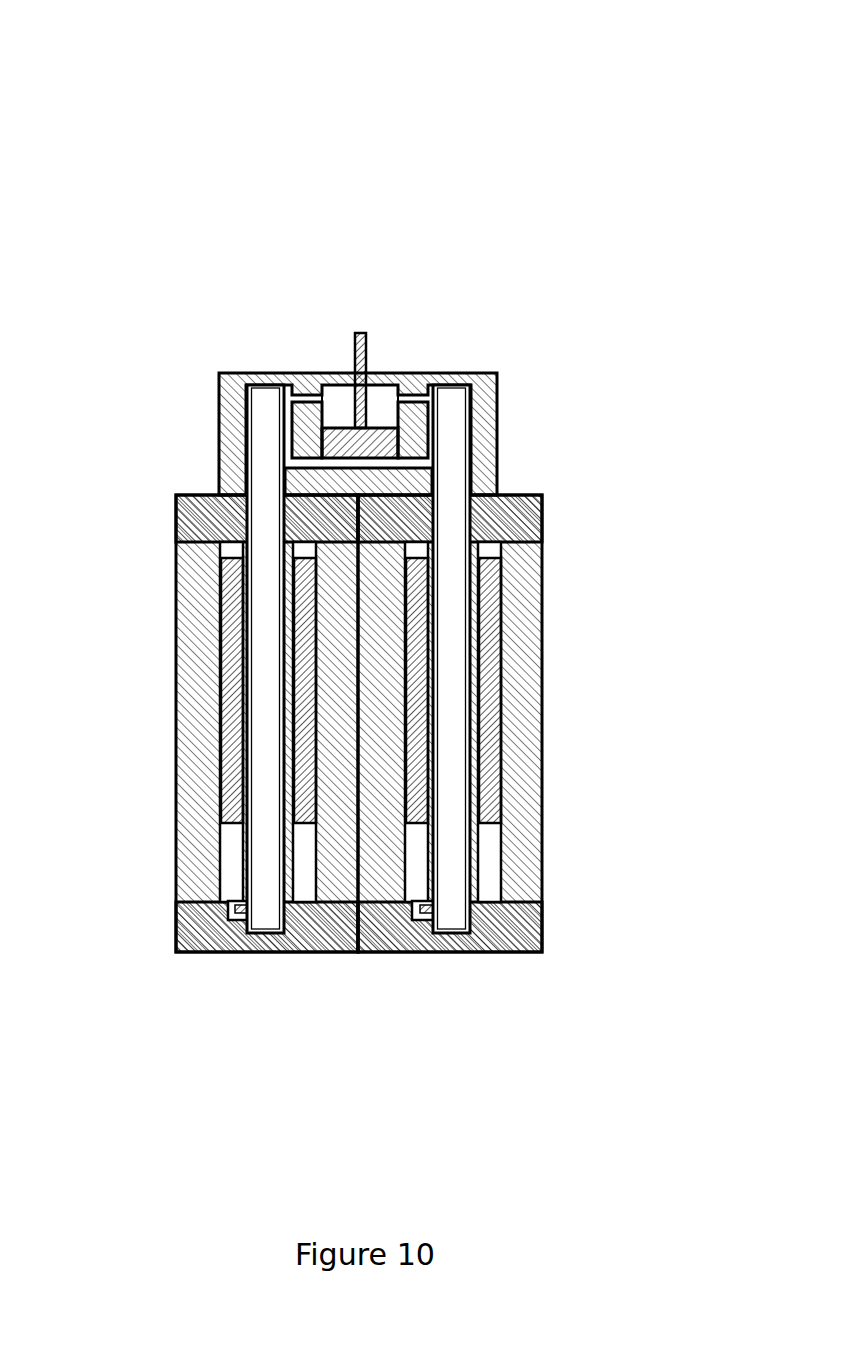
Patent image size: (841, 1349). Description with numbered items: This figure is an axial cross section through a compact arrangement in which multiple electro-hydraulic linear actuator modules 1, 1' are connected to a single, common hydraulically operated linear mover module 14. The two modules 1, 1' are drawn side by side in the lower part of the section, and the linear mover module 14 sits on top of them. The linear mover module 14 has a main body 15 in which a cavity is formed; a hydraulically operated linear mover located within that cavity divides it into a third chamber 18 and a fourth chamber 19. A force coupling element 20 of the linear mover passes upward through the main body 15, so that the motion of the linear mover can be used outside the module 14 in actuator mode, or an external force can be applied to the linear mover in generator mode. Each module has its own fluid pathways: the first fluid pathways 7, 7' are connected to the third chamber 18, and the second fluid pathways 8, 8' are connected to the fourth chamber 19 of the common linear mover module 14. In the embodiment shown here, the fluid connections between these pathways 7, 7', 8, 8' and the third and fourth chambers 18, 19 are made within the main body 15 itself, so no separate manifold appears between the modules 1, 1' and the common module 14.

The module 1 is at (226, 723).
The module 1' is at (505, 723).
The first fluid pathway 7 is at (178, 514).
The first fluid pathway 7' is at (543, 530).
The second fluid pathway 8 is at (234, 512).
The second fluid pathway 8' is at (489, 528).
The hydraulically operated linear mover module 14 is at (371, 249).
The main body 15 is at (487, 469).
The third chamber 18 is at (338, 397).
The fourth chamber 19 is at (378, 463).
The force coupling element 20 is at (359, 333).